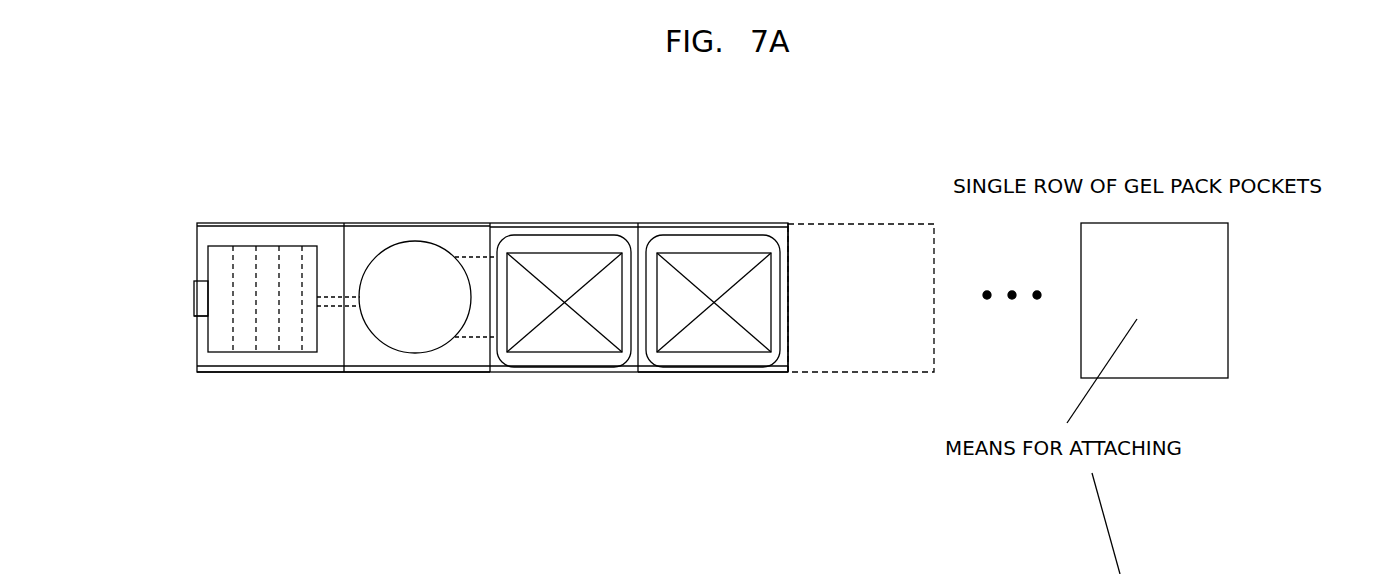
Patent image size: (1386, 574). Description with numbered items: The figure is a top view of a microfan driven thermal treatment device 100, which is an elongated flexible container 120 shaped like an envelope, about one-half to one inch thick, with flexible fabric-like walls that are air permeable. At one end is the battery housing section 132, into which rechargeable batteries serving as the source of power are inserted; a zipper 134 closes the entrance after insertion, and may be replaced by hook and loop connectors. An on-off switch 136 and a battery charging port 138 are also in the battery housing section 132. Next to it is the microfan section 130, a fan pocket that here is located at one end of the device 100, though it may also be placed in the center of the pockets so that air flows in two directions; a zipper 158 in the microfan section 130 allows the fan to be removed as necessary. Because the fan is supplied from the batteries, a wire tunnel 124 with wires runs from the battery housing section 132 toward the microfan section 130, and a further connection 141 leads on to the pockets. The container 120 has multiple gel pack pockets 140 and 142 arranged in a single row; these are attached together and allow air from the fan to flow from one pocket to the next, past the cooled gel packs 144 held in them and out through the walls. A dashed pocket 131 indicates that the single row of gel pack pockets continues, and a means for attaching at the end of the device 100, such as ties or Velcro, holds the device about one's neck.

The thermal treatment device 100 is at (498, 419).
The elongated flexible container 120 is at (607, 197).
The wire tunnel 124 is at (328, 312).
The microfan section 130 is at (413, 172).
The additional pocket (single row of gel pack pockets) 131 is at (867, 209).
The battery housing section 132 is at (267, 192).
The zipper 134 is at (315, 377).
The on-off switch 136 is at (195, 318).
The battery charging port 138 is at (195, 278).
The pockets 140 is at (657, 432).
The connector between circular compartment and pocket 141 is at (478, 257).
The gel pack pocket 142 is at (713, 224).
The gel packs 144 is at (573, 330).
The zipper 158 is at (415, 373).